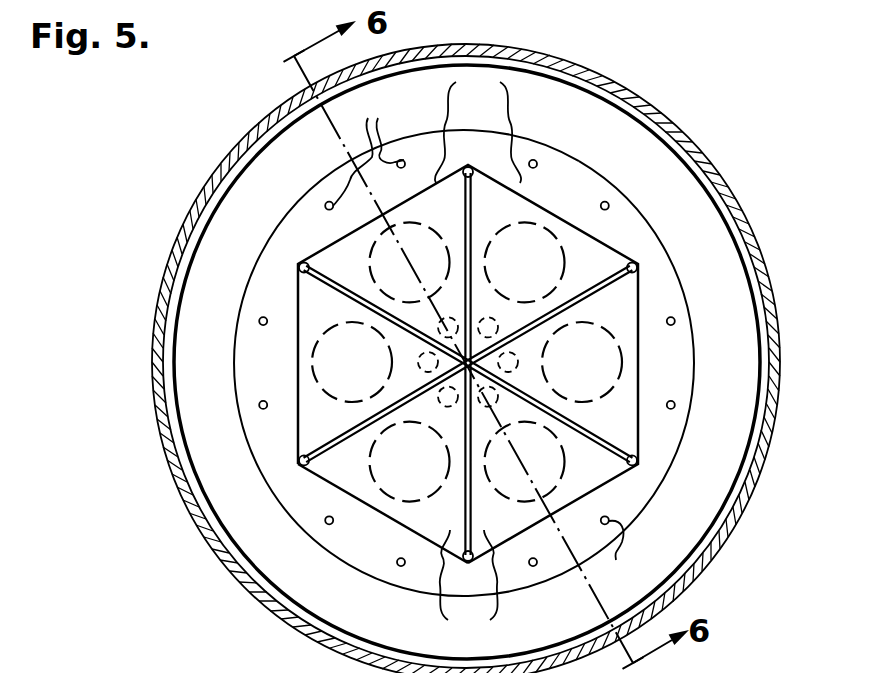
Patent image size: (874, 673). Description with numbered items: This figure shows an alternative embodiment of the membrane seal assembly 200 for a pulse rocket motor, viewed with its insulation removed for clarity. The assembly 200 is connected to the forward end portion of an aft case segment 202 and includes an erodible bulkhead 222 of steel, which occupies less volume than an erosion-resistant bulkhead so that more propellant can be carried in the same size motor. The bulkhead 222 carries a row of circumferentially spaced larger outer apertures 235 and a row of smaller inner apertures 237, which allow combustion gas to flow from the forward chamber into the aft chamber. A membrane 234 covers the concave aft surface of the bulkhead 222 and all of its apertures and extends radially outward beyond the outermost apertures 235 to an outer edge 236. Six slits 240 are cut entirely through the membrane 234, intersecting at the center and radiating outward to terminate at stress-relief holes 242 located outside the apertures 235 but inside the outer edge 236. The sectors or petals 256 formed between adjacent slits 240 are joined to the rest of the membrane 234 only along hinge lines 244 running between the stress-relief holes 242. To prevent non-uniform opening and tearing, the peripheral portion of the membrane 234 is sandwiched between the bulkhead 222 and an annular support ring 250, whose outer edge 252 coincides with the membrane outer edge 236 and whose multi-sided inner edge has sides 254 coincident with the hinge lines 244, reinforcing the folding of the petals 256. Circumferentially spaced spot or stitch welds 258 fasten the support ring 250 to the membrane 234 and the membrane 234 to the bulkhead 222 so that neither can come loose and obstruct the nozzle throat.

The membrane seal assembly 200 is at (609, 69).
The aft case segment 202 is at (640, 97).
The erodible bulkhead 222 is at (698, 172).
The membrane 234 is at (620, 415).
The larger outer apertures 235 is at (620, 340).
The outer edge 236 is at (686, 287).
The smaller inner apertures 237 is at (486, 318).
The slits 240 is at (322, 280).
The stress-relief holes 242 is at (636, 265).
The hinge lines 244 is at (578, 226).
The annular support ring 250 is at (660, 447).
The outer edge 252 is at (305, 205).
The sides 254 is at (330, 488).
The sectors or petals 256 is at (478, 354).
The spot or stitch welds 258 is at (603, 566).